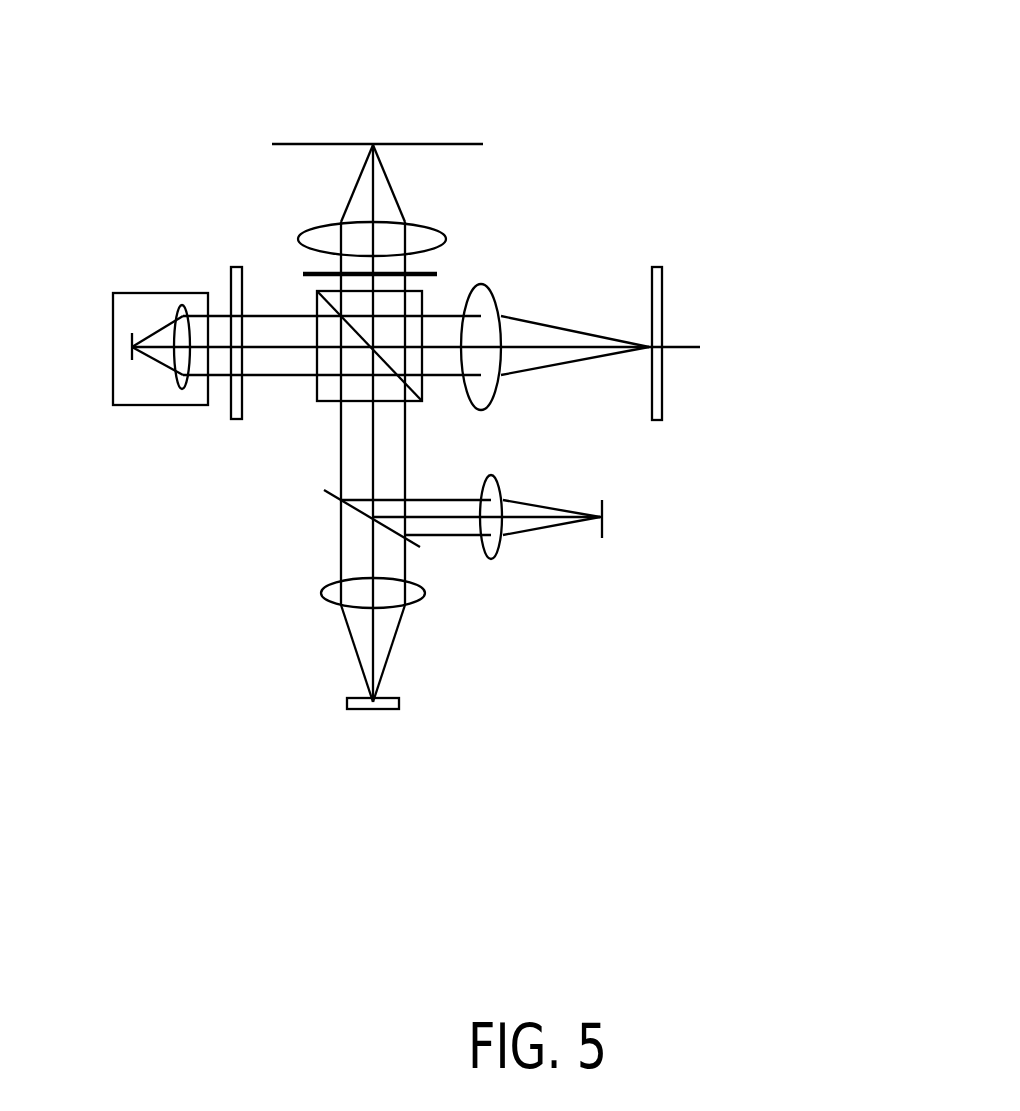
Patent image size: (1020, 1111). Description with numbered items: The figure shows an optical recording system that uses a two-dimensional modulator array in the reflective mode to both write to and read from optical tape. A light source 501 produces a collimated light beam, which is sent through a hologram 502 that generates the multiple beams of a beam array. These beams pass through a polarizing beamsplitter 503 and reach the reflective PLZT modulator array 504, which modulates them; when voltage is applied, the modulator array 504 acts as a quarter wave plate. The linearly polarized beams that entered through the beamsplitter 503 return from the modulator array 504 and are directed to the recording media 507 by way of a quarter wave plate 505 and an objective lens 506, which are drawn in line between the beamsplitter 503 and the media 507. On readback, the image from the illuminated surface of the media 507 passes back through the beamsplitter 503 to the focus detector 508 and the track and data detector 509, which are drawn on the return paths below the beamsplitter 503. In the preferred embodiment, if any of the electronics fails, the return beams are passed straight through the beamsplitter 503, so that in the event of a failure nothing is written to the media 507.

The light source 501 is at (112, 288).
The hologram 502 is at (231, 264).
The beamsplitter 503 is at (425, 396).
The modulator array 504 is at (658, 266).
The quarter wave plate 505 is at (441, 270).
The objective lens 506 is at (433, 226).
The recording media 507 is at (452, 143).
The focus detector 508 is at (607, 493).
The data detector 509 is at (397, 695).